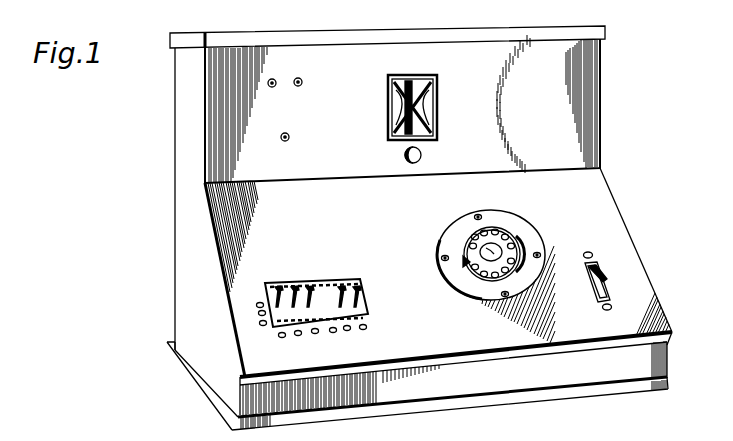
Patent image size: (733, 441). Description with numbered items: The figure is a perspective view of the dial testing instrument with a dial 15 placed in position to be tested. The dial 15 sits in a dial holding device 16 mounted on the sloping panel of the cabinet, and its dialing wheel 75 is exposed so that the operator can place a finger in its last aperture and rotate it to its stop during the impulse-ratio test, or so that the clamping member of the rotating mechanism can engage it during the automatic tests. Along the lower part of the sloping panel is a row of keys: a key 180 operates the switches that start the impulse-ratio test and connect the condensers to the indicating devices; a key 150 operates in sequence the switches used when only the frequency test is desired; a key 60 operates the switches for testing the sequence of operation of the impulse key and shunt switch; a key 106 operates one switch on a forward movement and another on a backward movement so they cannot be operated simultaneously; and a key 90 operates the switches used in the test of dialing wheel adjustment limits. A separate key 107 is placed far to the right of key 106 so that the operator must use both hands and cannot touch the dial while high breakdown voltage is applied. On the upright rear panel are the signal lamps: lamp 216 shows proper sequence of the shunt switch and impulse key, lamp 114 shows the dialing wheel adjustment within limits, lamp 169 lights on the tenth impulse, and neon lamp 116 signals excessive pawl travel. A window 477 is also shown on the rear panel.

The signal lamp 216 is at (301, 78).
The signal lamp 114 is at (273, 87).
The signal lamp 169 is at (290, 135).
The indicator window 477 is at (418, 75).
The lamp 116 is at (422, 153).
The dial holding device 16 is at (530, 209).
The dial 15 is at (500, 250).
The dialing wheel 75 is at (466, 262).
The key 107 is at (609, 277).
The key 180 is at (267, 283).
The key 150 is at (288, 286).
The key 60 is at (397, 257).
The key 106 is at (361, 290).
The key 90 is at (312, 289).